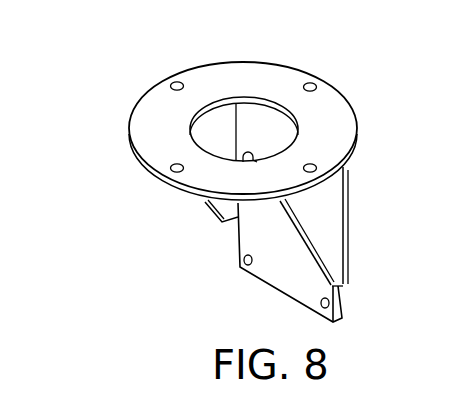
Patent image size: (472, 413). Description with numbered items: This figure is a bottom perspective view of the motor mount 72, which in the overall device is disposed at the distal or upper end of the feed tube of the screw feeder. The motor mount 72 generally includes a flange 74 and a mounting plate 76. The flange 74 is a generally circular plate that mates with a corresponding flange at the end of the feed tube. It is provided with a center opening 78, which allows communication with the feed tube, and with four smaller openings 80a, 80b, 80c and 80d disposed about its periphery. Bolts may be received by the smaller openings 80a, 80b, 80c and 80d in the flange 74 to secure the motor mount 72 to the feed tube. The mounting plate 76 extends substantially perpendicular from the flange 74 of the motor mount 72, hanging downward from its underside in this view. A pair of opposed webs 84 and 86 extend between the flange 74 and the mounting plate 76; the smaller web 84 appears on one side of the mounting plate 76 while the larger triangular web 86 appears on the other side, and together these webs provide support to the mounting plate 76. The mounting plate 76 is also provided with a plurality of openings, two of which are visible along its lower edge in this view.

The motor mount 72 is at (142, 78).
The flange 74 is at (265, 72).
The mounting plate 76 is at (290, 277).
The center opening 78 is at (225, 126).
The smaller opening 80a is at (177, 80).
The smaller opening 80b is at (171, 170).
The smaller opening 80c is at (317, 165).
The smaller opening 80d is at (316, 82).
The web 84 is at (212, 212).
The web 86 is at (325, 233).